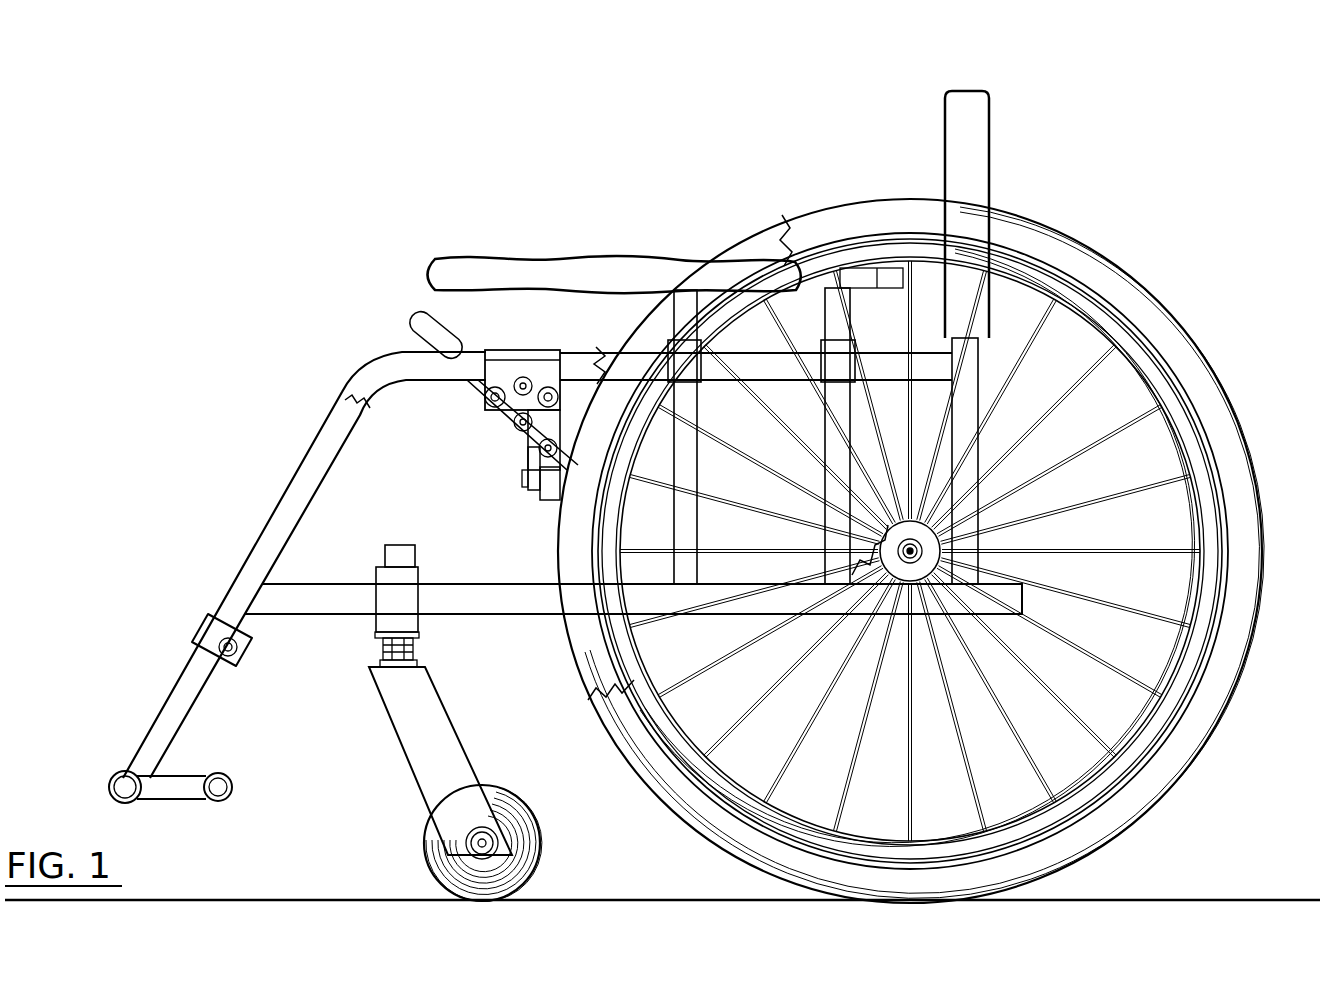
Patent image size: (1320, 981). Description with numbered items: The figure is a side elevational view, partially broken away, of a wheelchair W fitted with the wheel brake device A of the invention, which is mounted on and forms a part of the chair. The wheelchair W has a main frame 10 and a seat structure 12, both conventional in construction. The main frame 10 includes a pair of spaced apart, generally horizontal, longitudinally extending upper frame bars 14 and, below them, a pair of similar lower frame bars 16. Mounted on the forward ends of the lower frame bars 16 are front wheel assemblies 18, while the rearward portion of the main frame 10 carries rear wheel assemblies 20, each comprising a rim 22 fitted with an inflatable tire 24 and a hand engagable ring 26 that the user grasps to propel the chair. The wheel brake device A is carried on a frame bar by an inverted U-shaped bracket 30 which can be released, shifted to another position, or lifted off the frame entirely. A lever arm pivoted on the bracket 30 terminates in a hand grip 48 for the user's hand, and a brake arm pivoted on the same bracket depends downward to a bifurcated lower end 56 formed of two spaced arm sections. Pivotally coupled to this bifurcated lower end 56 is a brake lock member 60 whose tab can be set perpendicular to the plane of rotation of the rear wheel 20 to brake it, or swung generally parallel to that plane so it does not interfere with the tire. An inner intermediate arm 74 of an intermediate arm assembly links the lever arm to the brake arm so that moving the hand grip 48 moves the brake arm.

The main frame 10 is at (322, 398).
The seat structure 12 is at (932, 150).
The upper frame bars 14 is at (400, 366).
The lower frame bars 16 is at (473, 596).
The front wheel assemblies 18 is at (385, 793).
The rear wheel assemblies 20 is at (939, 536).
The rims 22 is at (1218, 617).
The inflatable tires 24 is at (1256, 470).
The hand engagable rings 26 is at (1164, 378).
The U-shaped bracket 30 is at (541, 342).
The hand grip 48 is at (428, 346).
The bifurcated lower end 56 is at (516, 461).
The brake lock member 60 is at (533, 500).
The inner intermediate arm 74 is at (526, 436).
The wheelchair W is at (392, 312).
The wheel brake device A is at (513, 330).